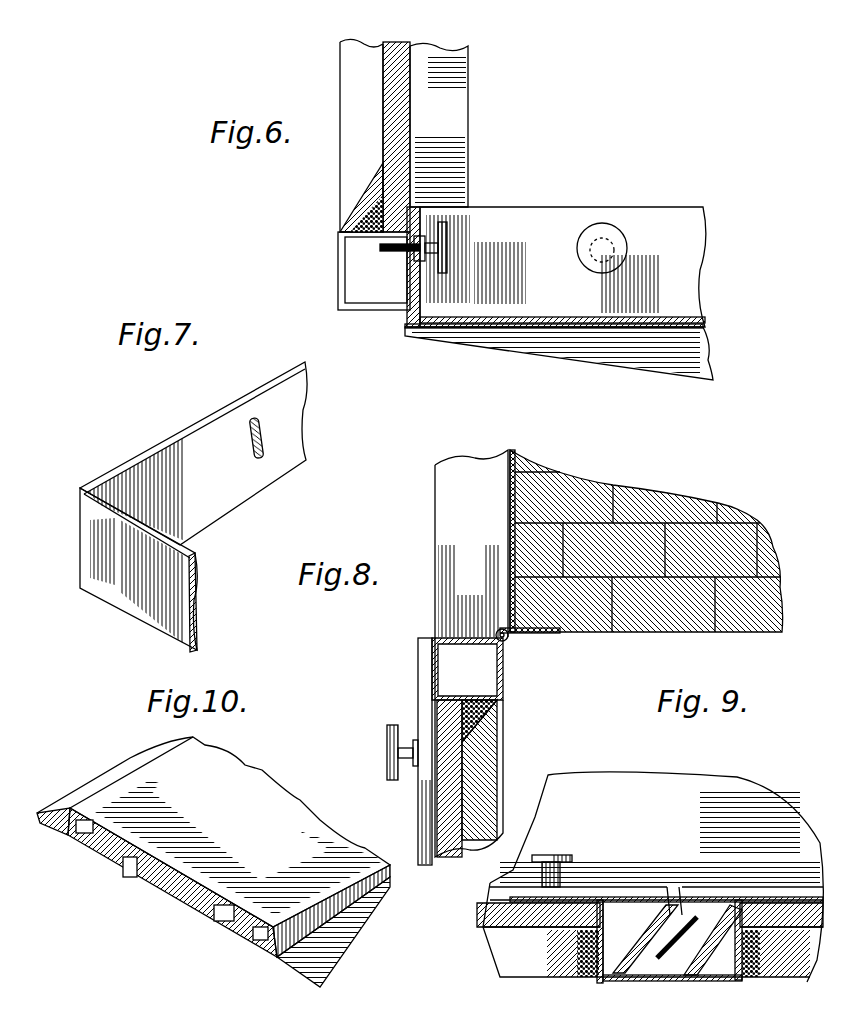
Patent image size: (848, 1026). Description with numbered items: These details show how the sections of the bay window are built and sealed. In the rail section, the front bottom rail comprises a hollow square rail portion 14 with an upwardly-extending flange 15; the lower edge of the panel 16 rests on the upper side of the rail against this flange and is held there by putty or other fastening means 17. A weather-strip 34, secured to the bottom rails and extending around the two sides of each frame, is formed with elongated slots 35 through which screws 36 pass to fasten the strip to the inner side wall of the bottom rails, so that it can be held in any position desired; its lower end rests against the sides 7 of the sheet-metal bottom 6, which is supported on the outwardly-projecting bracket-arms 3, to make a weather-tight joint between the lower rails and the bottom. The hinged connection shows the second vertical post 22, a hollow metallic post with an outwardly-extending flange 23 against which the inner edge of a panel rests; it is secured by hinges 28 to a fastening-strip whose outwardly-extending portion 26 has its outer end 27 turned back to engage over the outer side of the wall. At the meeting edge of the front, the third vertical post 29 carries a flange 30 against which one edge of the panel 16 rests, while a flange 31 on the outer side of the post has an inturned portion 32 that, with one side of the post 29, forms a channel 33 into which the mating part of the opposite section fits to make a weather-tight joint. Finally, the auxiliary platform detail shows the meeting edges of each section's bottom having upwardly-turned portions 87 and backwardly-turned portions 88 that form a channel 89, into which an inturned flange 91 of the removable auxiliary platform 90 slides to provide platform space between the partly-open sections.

In FIG. 6, the bracket-arms 3 is at (630, 345).
In FIG. 6, the bottom 6 is at (559, 352).
In FIG. 6, the sides of the bottom 7 is at (407, 316).
In FIG. 6, the hollow square rail portion 14 is at (356, 267).
In FIG. 6, the upwardly-extending flange 15 is at (410, 210).
In FIG. 6, the panel 16 is at (410, 128).
In FIG. 9, the panel 16 is at (528, 917).
In FIG. 6, the putty or other fastening means 17 is at (338, 218).
In FIG. 8, the second vertical post 22 is at (503, 668).
In FIG. 8, the outwardly-extending flange 23 is at (436, 708).
In FIG. 8, the outwardly-extending portion 26 is at (508, 516).
In FIG. 8, the outer end 27 is at (560, 632).
In FIG. 8, the hinges 28 is at (508, 639).
In FIG. 9, the third vertical post 29 is at (672, 940).
In FIG. 9, the flange 30 is at (596, 900).
In FIG. 9, the flange 31 is at (640, 975).
In FIG. 9, the inturned portion 32 is at (686, 978).
In FIG. 9, the channel 33 is at (672, 925).
In FIG. 6, the weather-strip 34 is at (424, 309).
In FIG. 7, the weather-strip 34 is at (228, 490).
In FIG. 8, the weather-strip 34 is at (420, 662).
In FIG. 9, the weather-strip 34 is at (565, 890).
In FIG. 6, the elongated slots 35 is at (412, 252).
In FIG. 7, the elongated slots 35 is at (262, 452).
In FIG. 6, the screws 36 is at (447, 258).
In FIG. 8, the screws 36 is at (387, 749).
In FIG. 9, the screws 36 is at (548, 857).
In FIG. 10, the upwardly-turned portions 87 is at (215, 915).
In FIG. 10, the backwardly-turned portions 88 is at (252, 938).
In FIG. 10, the channel 89 is at (225, 925).
In FIG. 10, the auxiliary platform 90 is at (185, 880).
In FIG. 10, the inturned flange 91 is at (118, 862).